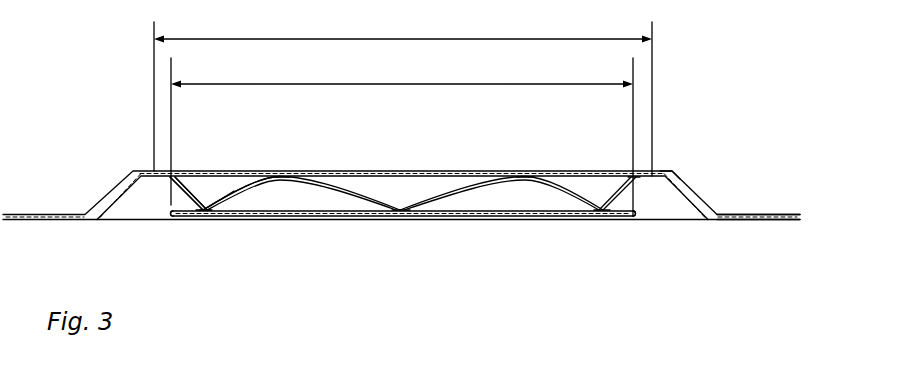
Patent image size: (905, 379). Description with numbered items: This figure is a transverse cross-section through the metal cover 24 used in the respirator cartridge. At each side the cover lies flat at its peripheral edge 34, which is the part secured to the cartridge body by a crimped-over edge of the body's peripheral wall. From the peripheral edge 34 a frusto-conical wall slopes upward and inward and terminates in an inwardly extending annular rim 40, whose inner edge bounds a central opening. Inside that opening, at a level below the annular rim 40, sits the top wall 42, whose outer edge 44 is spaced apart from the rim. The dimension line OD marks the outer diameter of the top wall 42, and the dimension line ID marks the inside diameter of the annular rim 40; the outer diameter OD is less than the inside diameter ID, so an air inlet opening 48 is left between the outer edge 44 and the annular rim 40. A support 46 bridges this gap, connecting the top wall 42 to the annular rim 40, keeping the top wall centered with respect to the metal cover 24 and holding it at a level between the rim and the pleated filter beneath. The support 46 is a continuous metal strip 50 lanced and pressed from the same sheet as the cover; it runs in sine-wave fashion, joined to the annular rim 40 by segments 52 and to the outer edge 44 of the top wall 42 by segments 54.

The metal cover 24 is at (709, 202).
The peripheral edge 34 is at (744, 217).
The annular rim 40 is at (671, 172).
The top wall 42 is at (309, 220).
The outer edge 44 is at (157, 222).
The support 46 is at (430, 194).
The air inlet opening 48 is at (161, 204).
The continuous metal strip 50 is at (243, 220).
The segments 52 is at (284, 173).
The segments 54 is at (203, 220).
The inside diameter dimension line ID is at (322, 38).
The outer diameter dimension line OD is at (346, 84).